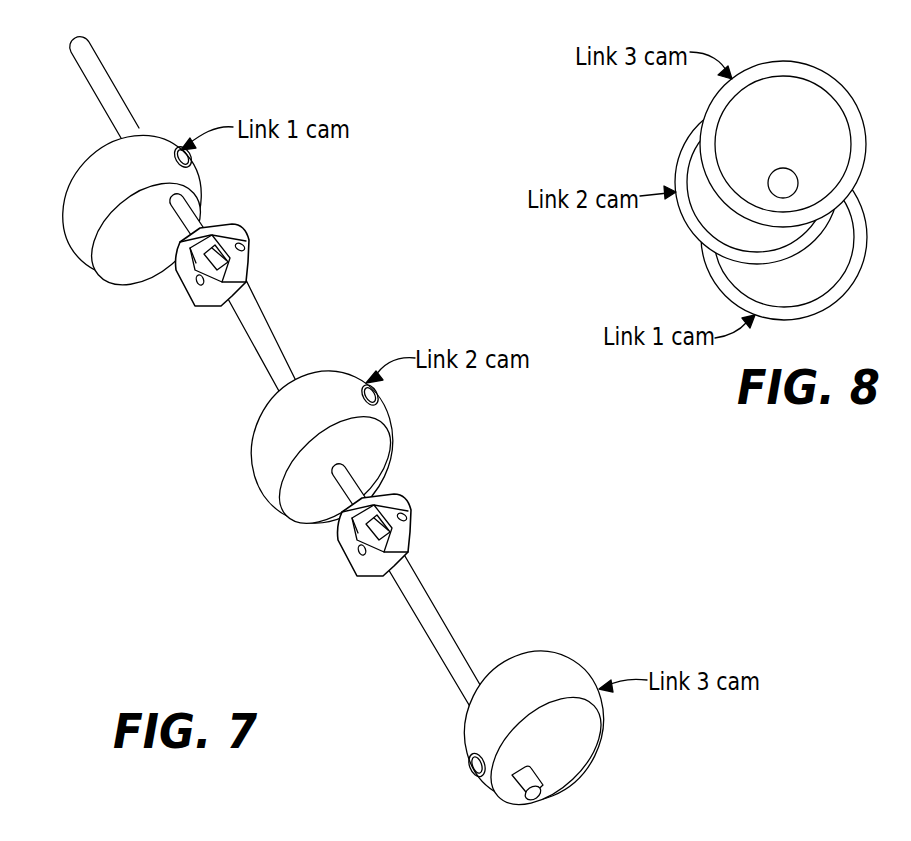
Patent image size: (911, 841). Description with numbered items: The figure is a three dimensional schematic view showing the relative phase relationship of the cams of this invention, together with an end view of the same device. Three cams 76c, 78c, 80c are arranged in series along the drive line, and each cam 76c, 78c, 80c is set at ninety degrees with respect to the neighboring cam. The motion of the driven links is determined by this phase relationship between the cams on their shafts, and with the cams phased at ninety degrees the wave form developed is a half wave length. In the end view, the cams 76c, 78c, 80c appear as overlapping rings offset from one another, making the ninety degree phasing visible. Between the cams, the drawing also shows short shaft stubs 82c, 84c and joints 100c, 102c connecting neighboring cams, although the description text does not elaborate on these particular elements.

In FIG. 7, the cam 76c is at (97, 187).
In FIG. 8, the cam 76c is at (728, 283).
In FIG. 7, the cam 78c is at (323, 377).
In FIG. 8, the cam 78c is at (690, 167).
In FIG. 7, the cam 80c is at (560, 673).
In FIG. 8, the cam 80c is at (803, 80).
In FIG. 7, the cam shaft stub 82c is at (188, 212).
In FIG. 7, the cam shaft stub 84c is at (350, 483).
In FIG. 7, the universal joint 100c is at (245, 243).
In FIG. 7, the universal joint 102c is at (407, 507).